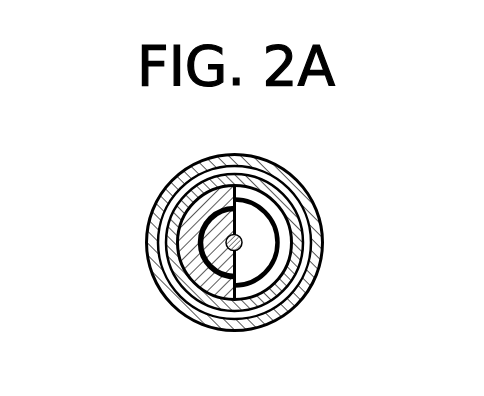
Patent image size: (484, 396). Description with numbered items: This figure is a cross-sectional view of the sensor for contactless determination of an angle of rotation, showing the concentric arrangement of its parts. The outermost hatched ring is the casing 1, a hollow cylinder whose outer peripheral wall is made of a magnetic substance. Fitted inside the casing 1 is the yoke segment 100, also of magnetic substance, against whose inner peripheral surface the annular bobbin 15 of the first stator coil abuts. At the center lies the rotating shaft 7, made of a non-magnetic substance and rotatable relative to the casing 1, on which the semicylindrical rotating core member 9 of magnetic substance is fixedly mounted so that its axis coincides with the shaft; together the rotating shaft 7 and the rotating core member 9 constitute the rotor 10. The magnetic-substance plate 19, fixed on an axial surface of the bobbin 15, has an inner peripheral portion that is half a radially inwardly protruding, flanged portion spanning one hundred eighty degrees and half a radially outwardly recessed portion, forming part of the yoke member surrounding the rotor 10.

The casing 1 is at (185, 314).
The magnetic-substance plate 19 is at (160, 262).
The yoke segment 100 is at (268, 178).
The rotor 10 is at (303, 243).
The rotating core member 9 is at (233, 221).
The rotating shaft 7 is at (242, 244).
The annular bobbin 15 is at (265, 272).